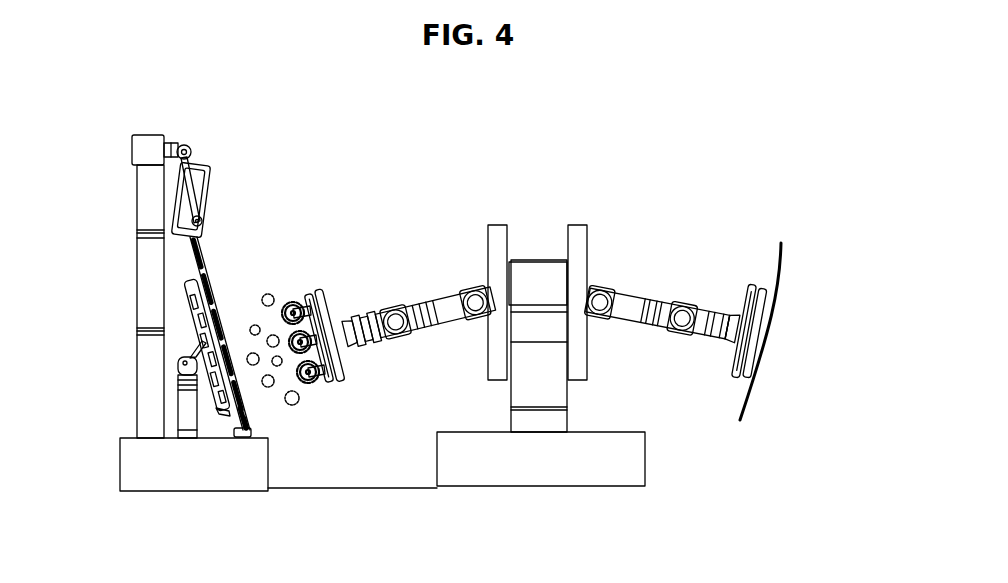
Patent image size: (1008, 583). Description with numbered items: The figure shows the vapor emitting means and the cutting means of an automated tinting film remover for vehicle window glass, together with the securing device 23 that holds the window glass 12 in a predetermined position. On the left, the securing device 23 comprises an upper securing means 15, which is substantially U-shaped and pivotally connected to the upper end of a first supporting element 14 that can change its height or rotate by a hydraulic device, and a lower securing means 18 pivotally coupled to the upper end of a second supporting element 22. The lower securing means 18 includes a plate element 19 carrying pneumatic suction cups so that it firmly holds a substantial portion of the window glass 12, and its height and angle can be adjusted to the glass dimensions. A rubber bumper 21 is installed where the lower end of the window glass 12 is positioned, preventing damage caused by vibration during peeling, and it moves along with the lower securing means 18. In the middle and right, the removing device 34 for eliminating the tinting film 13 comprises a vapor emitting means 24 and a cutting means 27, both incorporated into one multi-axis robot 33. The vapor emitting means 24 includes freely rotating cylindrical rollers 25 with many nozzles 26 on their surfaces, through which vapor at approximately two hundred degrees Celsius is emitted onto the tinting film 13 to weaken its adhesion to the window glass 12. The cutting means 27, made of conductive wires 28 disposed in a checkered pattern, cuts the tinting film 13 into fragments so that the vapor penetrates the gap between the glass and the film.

The window glass 12 is at (198, 260).
The tinting film 13 is at (250, 418).
The first supporting element 14 is at (147, 200).
The upper securing means 15 is at (216, 176).
The lower securing means 18 is at (181, 314).
The plate element 19 is at (223, 412).
The bumper 21 is at (243, 437).
The second supporting element 22 is at (183, 412).
The securing device 23 is at (252, 250).
The vapor emitting means 24 is at (348, 311).
The cylindrical roller 25 is at (302, 292).
The nozzle 26 is at (313, 386).
The cutting means 27 is at (736, 296).
The conductive wire 28 is at (780, 243).
The multi-axis robot 33 is at (570, 388).
The removing device 34 is at (535, 218).